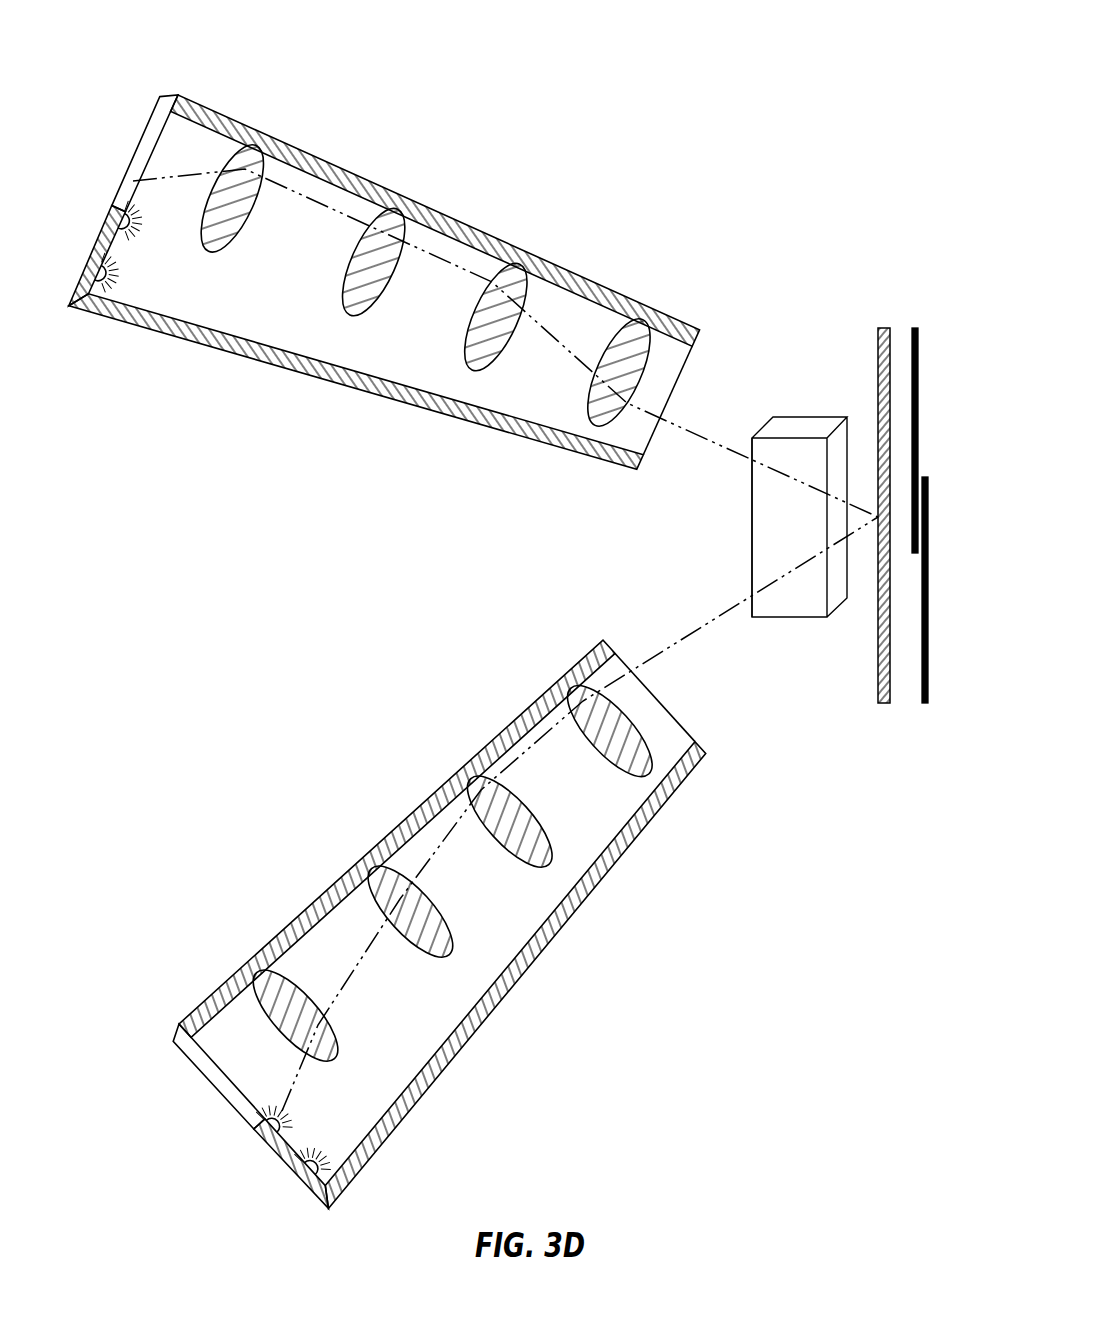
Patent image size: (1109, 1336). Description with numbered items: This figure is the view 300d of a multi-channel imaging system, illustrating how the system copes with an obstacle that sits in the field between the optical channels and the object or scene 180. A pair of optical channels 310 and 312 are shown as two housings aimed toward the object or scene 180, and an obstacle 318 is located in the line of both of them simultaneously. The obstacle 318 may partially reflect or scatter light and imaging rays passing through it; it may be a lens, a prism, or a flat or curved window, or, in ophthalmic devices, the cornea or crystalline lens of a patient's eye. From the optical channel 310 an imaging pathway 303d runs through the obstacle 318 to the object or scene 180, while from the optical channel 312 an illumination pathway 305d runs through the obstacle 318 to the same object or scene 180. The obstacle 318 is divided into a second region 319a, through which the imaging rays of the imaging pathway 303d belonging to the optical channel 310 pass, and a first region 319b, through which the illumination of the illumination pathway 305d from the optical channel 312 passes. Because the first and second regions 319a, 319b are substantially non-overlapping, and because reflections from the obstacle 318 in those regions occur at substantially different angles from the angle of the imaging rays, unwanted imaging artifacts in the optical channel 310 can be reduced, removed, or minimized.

The view 300d is at (903, 46).
The optical channel 310 is at (642, 153).
The optical channel 312 is at (644, 1122).
The imaging pathway 303d is at (696, 423).
The illumination pathway 305d is at (686, 648).
The obstacle 318 is at (792, 618).
The second region 319a is at (742, 438).
The first region 319b is at (742, 528).
The object or scene 180 is at (878, 400).